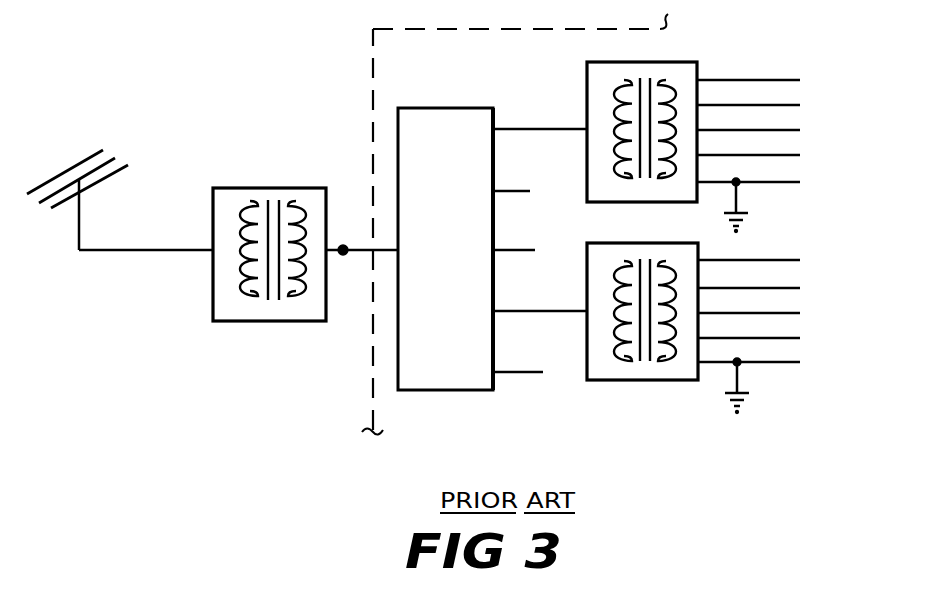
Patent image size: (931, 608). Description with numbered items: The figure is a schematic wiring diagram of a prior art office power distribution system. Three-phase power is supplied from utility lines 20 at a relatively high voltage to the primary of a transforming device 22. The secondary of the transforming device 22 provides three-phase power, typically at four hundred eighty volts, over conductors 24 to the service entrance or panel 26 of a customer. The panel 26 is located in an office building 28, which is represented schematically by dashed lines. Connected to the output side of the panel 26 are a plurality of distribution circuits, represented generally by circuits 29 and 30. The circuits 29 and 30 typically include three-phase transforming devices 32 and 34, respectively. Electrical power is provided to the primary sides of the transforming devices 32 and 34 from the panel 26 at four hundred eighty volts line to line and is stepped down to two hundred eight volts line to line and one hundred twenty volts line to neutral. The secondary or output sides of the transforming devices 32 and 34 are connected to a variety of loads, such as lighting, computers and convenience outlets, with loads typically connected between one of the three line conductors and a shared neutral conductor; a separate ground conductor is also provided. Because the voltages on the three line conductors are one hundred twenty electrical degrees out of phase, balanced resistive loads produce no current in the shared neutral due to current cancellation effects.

The utility lines 20 is at (104, 153).
The transforming device 22 is at (250, 188).
The conductors 24 is at (343, 255).
The service panel 26 is at (457, 107).
The office building 28 is at (362, 66).
The distribution circuit 29 is at (762, 128).
The distribution circuit 30 is at (714, 396).
The transforming device 32 is at (587, 98).
The transforming device 34 is at (615, 382).